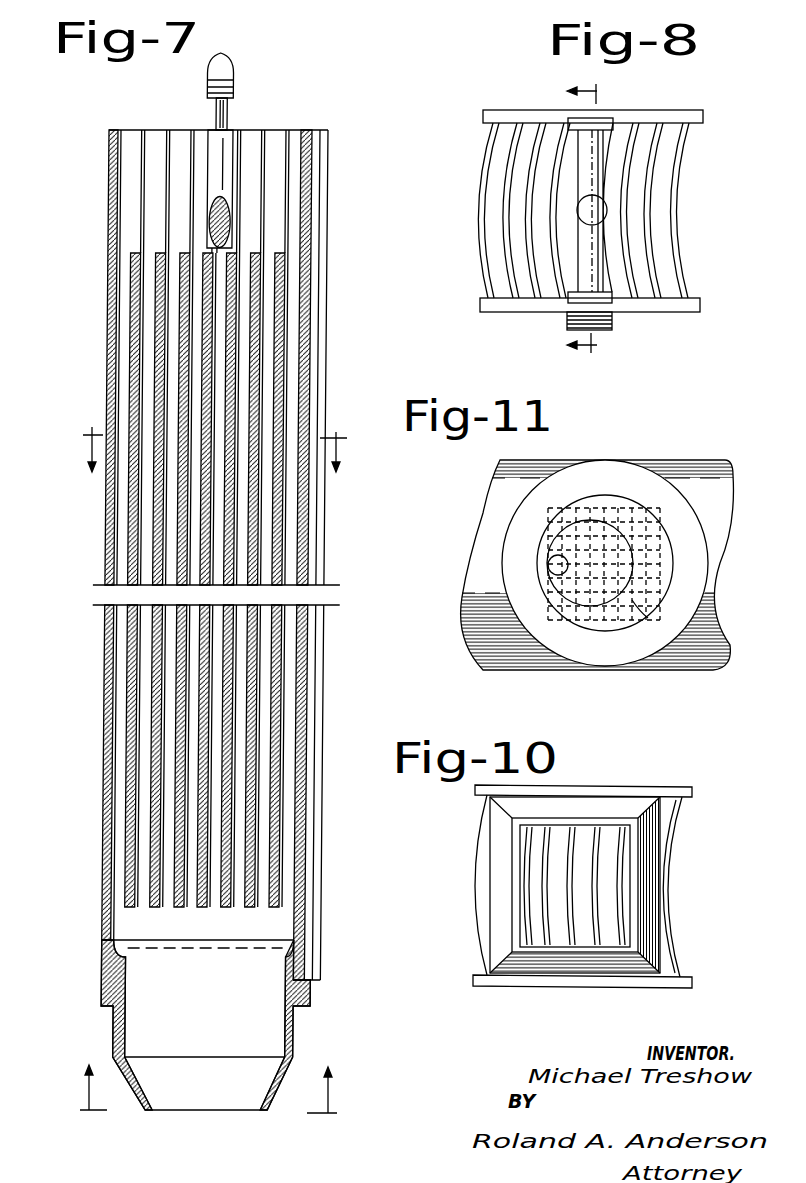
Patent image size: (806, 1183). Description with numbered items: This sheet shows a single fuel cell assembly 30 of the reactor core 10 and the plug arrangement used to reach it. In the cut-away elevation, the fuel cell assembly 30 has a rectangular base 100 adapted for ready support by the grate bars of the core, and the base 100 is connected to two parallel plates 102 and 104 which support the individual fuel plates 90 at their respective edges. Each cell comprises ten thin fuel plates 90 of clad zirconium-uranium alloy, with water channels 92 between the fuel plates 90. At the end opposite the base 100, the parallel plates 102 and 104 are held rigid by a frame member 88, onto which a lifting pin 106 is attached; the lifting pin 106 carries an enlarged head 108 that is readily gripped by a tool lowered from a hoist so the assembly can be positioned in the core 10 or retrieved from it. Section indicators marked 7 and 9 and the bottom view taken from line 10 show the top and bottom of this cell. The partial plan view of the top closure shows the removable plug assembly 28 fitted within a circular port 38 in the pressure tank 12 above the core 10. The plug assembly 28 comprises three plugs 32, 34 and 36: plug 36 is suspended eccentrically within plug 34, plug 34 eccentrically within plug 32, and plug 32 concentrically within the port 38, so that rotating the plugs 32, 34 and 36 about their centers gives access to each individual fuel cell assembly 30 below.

In FIG. 8, the section line 7- 7 is at (597, 220).
In FIG. 7, the section line 9- 9 is at (210, 449).
In FIG. 7, the reactor core 10 is at (209, 1089).
In FIG. 11, the reactor core 10 is at (664, 543).
In FIG. 11, the pressure tank 12 is at (700, 473).
In FIG. 11, the removable plug assembly 28 is at (632, 491).
In FIG. 7, the fuel cell assembly 30 is at (96, 760).
In FIG. 11, the plug 32 is at (587, 597).
In FIG. 11, the plug 34 is at (627, 623).
In FIG. 11, the plug 36 is at (547, 567).
In FIG. 11, the circular port 38 is at (667, 577).
In FIG. 7, the frame member 88 is at (210, 219).
In FIG. 8, the frame member 88 is at (583, 247).
In FIG. 7, the fuel plate 90 is at (277, 670).
In FIG. 8, the fuel plate 90 is at (507, 207).
In FIG. 10, the fuel plate 90 is at (572, 875).
In FIG. 7, the water channel 92 is at (265, 705).
In FIG. 8, the water channel 92 is at (638, 157).
In FIG. 10, the water channel 92 is at (603, 853).
In FIG. 7, the rectangular base 100 is at (310, 1006).
In FIG. 10, the rectangular base 100 is at (647, 897).
In FIG. 8, the parallel plate 102 is at (692, 310).
In FIG. 10, the parallel plate 102 is at (690, 977).
In FIG. 7, the parallel plate 104 is at (326, 352).
In FIG. 8, the parallel plate 104 is at (678, 115).
In FIG. 10, the parallel plate 104 is at (692, 792).
In FIG. 7, the lifting pin 106 is at (216, 115).
In FIG. 7, the enlarged head 108 is at (207, 78).
In FIG. 8, the enlarged head 108 is at (592, 210).